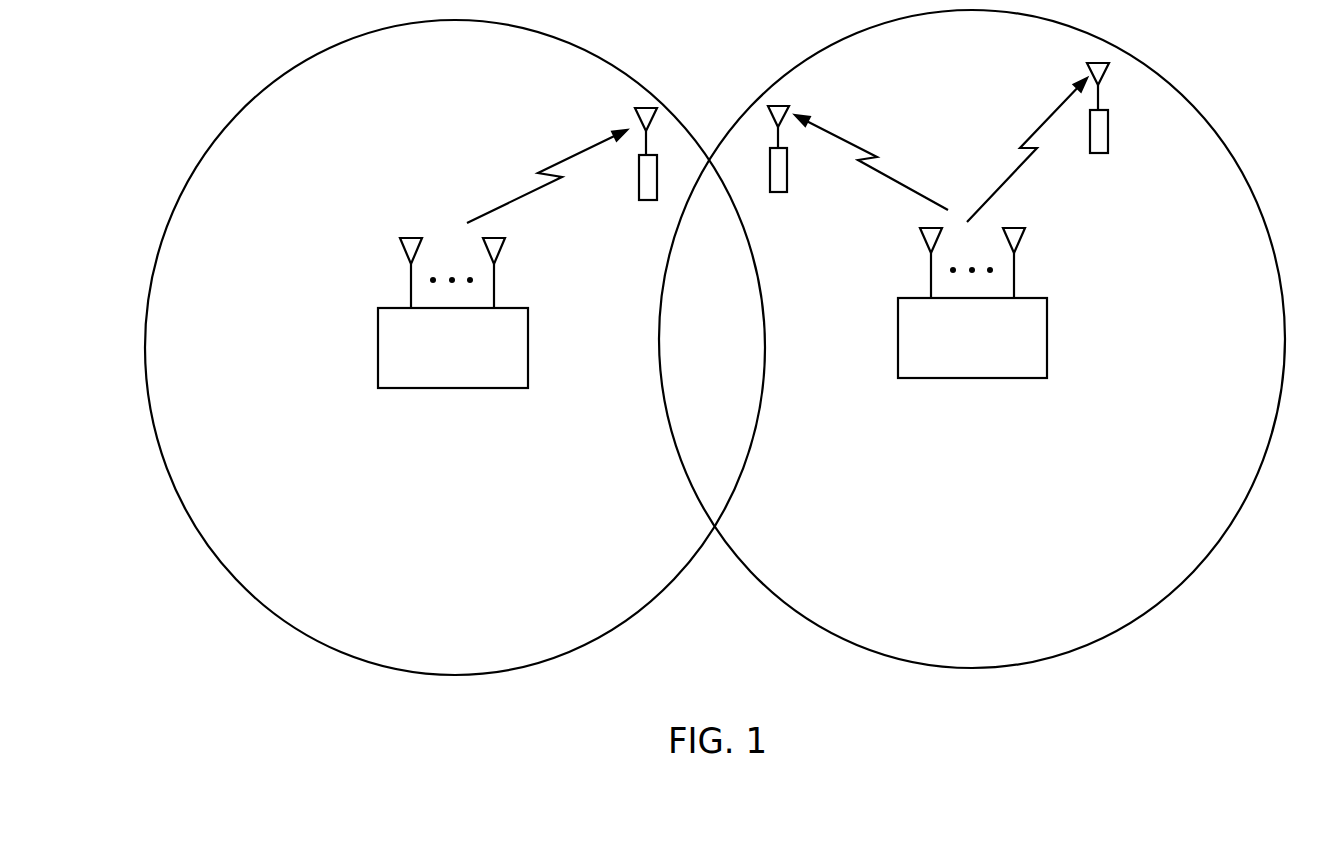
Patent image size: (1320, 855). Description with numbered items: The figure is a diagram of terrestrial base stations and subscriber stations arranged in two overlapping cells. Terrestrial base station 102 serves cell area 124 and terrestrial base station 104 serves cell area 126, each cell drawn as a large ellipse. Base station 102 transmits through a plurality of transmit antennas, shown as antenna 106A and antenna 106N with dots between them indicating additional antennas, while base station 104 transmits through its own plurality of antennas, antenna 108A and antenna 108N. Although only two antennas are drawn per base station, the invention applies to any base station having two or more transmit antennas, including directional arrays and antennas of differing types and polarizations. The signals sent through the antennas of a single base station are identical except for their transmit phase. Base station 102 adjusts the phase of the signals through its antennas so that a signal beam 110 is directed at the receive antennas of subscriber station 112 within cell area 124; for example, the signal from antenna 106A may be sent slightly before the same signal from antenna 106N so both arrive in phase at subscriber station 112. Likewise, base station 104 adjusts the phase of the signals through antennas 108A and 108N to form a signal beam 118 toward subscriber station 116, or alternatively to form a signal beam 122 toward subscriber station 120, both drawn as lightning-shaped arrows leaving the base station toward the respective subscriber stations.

The terrestrial base station 102 is at (446, 390).
The terrestrial base station 104 is at (966, 380).
The transmit antenna 106A is at (408, 288).
The transmit antenna 106N is at (496, 286).
The transmit antenna 108A is at (928, 278).
The transmit antenna 108N is at (1017, 278).
The signal beam 110 is at (567, 160).
The subscriber station 112 is at (652, 200).
The subscriber station 116 is at (783, 192).
The signal beam 118 is at (850, 143).
The subscriber station 120 is at (1103, 153).
The signal beam 122 is at (1048, 122).
The cell area 124 is at (245, 108).
The cell area 126 is at (1200, 110).